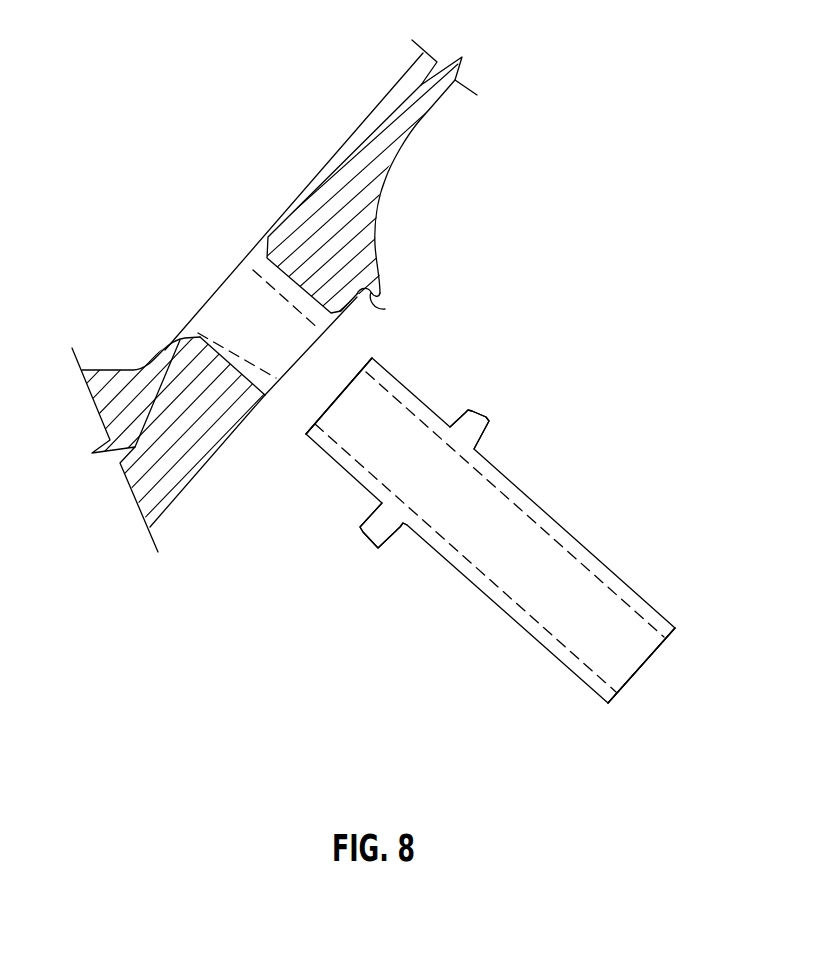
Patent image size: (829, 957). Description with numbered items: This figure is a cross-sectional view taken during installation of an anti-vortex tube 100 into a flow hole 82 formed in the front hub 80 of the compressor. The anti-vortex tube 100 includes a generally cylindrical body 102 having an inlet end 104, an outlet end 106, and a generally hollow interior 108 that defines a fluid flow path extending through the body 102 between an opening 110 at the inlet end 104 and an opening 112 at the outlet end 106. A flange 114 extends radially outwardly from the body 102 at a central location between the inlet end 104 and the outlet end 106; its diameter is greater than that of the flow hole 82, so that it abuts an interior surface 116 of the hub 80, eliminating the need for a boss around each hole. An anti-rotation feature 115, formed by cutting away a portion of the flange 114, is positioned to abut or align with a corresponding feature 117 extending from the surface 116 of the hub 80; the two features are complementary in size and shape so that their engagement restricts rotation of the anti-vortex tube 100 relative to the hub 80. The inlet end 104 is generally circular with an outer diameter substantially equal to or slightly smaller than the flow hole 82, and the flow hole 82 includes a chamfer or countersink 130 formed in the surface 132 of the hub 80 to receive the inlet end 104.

The front hub 80 is at (435, 100).
The flow hole 82 is at (228, 302).
The anti-vortex tube 100 is at (554, 708).
The body 102 is at (572, 530).
The inlet end 104 is at (365, 363).
The outlet end 106 is at (680, 634).
The hollow interior 108 is at (527, 591).
The opening 110 is at (337, 398).
The opening 112 is at (627, 681).
The flange 114 is at (366, 541).
The anti-rotation feature 115 is at (471, 410).
The interior surface 116 is at (180, 490).
The corresponding feature 117 is at (385, 309).
The countersink 130 is at (198, 336).
The surface 132 is at (372, 98).